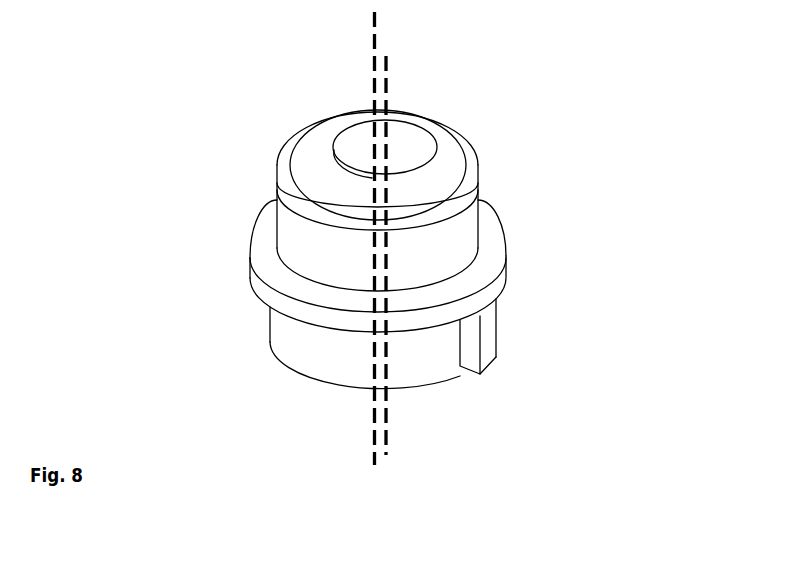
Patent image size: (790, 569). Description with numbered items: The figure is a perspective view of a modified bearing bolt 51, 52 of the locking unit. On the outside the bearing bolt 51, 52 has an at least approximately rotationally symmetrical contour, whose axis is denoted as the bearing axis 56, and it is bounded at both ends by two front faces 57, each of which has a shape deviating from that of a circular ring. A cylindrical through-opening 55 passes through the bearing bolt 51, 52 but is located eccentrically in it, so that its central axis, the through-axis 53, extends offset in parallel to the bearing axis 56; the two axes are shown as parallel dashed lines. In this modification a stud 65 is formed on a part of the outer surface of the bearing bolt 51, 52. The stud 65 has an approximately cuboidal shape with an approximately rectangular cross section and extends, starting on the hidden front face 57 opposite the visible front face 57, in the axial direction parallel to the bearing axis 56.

The bearing bolt 51 is at (364, 229).
The bearing bolt 52 is at (364, 229).
The through-axis 53 is at (384, 421).
The through-opening 55 is at (355, 148).
The bearing axis 56 is at (374, 418).
The front face 57 is at (423, 186).
The stud 65 is at (481, 313).